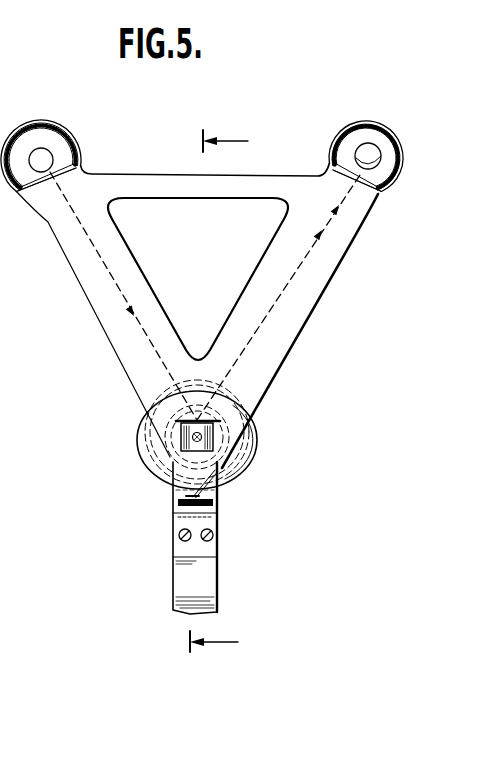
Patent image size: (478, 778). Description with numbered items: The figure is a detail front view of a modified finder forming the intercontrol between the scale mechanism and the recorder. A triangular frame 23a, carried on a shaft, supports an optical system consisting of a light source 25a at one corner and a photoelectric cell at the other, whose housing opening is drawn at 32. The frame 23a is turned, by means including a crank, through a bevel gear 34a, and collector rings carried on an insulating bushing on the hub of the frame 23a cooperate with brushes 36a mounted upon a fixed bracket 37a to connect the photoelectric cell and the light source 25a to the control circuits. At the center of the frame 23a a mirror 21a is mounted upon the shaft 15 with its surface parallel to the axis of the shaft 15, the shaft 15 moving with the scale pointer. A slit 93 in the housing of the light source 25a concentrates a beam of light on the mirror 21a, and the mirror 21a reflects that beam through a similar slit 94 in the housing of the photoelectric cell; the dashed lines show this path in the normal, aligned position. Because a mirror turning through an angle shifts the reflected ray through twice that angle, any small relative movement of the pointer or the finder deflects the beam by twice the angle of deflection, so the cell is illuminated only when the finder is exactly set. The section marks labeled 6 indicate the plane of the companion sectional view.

The triangular frame 23a is at (262, 271).
The light source 25a is at (48, 151).
The slit 93 is at (50, 172).
The opening in right lug 32 is at (374, 153).
The slit 94 is at (361, 175).
The bevel gear 34a is at (243, 461).
The mirror 21a is at (207, 423).
The shaft 15 is at (203, 438).
The brushes 36a is at (217, 483).
The fixed bracket 37a is at (218, 542).
The section line 6- 6 is at (209, 392).